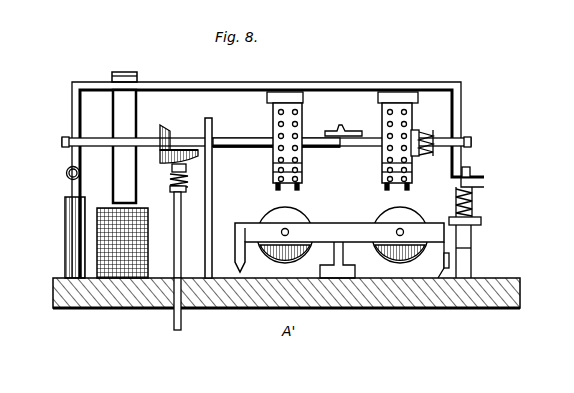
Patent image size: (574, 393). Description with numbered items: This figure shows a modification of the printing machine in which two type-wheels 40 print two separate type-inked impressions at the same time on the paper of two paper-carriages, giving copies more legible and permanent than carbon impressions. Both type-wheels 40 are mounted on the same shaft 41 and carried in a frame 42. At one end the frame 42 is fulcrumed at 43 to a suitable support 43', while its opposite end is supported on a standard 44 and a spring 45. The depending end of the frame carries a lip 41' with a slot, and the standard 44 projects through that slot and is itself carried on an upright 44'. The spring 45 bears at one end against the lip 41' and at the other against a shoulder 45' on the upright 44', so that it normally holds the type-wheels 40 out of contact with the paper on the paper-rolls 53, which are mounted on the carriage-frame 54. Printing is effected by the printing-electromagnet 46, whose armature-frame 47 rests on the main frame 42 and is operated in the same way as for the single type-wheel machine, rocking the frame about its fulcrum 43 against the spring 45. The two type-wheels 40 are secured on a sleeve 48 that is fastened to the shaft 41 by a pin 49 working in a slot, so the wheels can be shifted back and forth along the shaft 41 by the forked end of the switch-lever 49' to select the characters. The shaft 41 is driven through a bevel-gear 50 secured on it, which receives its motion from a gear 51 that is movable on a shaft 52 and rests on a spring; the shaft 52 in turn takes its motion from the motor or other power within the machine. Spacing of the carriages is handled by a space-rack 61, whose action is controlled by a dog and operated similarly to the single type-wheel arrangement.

The type-wheel 40 is at (302, 122).
The shaft 41 is at (259, 136).
The lip 41' is at (507, 196).
The frame 42 is at (476, 98).
The fulcrum 43 is at (49, 179).
The support 43' is at (52, 237).
The standard 44 is at (490, 178).
The upright 44' is at (490, 251).
The spring 45 is at (486, 202).
The shoulder 45' is at (485, 225).
The printing-electromagnet 46 is at (97, 234).
The armature-frame 47 is at (124, 72).
The sleeve 48 is at (276, 128).
The pin 49 is at (343, 122).
The switch-lever 49' is at (235, 198).
The bevel-gear 50 is at (164, 130).
The gear 51 is at (171, 172).
The shaft 52 is at (173, 322).
The paper-roll 53 is at (182, 186).
The carriage-frame 54 is at (472, 248).
The space-rack 61 is at (446, 268).